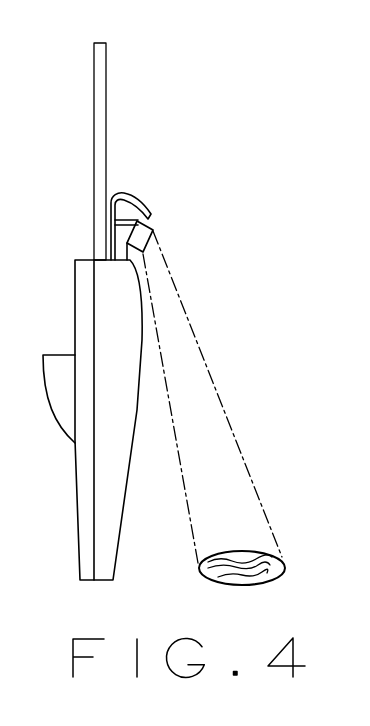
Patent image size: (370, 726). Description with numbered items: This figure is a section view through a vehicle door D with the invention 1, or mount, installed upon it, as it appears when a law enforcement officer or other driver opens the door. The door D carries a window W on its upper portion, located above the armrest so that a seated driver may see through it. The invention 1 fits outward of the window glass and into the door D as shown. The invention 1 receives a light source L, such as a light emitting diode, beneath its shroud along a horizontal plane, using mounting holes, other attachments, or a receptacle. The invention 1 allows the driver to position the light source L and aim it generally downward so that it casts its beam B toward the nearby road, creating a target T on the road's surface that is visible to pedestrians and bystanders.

The window W is at (93, 90).
The invention 1 is at (133, 186).
The light source L is at (153, 226).
The beam B is at (237, 443).
The door D is at (110, 497).
The target T is at (250, 586).